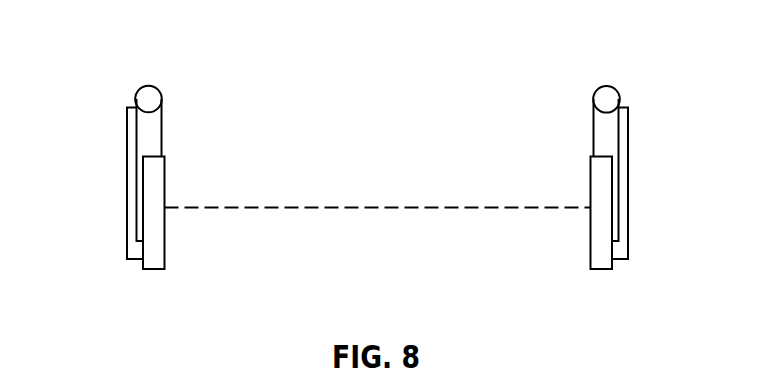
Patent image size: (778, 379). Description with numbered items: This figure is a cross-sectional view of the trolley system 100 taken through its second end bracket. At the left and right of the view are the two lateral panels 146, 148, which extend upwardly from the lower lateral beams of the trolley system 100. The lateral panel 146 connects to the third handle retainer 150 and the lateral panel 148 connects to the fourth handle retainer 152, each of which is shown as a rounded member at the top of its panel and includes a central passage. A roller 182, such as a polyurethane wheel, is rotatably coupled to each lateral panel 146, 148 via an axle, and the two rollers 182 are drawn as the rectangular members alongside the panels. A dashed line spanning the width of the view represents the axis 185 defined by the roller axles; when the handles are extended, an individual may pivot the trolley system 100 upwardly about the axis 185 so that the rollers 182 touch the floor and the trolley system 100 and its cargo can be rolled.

The trolley system 100 is at (116, 47).
The lateral panel 146 is at (628, 178).
The lateral panel 148 is at (127, 165).
The third handle retainer 150 is at (162, 98).
The fourth handle retainer 152 is at (620, 100).
The roller 182 is at (165, 240).
The axis 185 is at (378, 207).